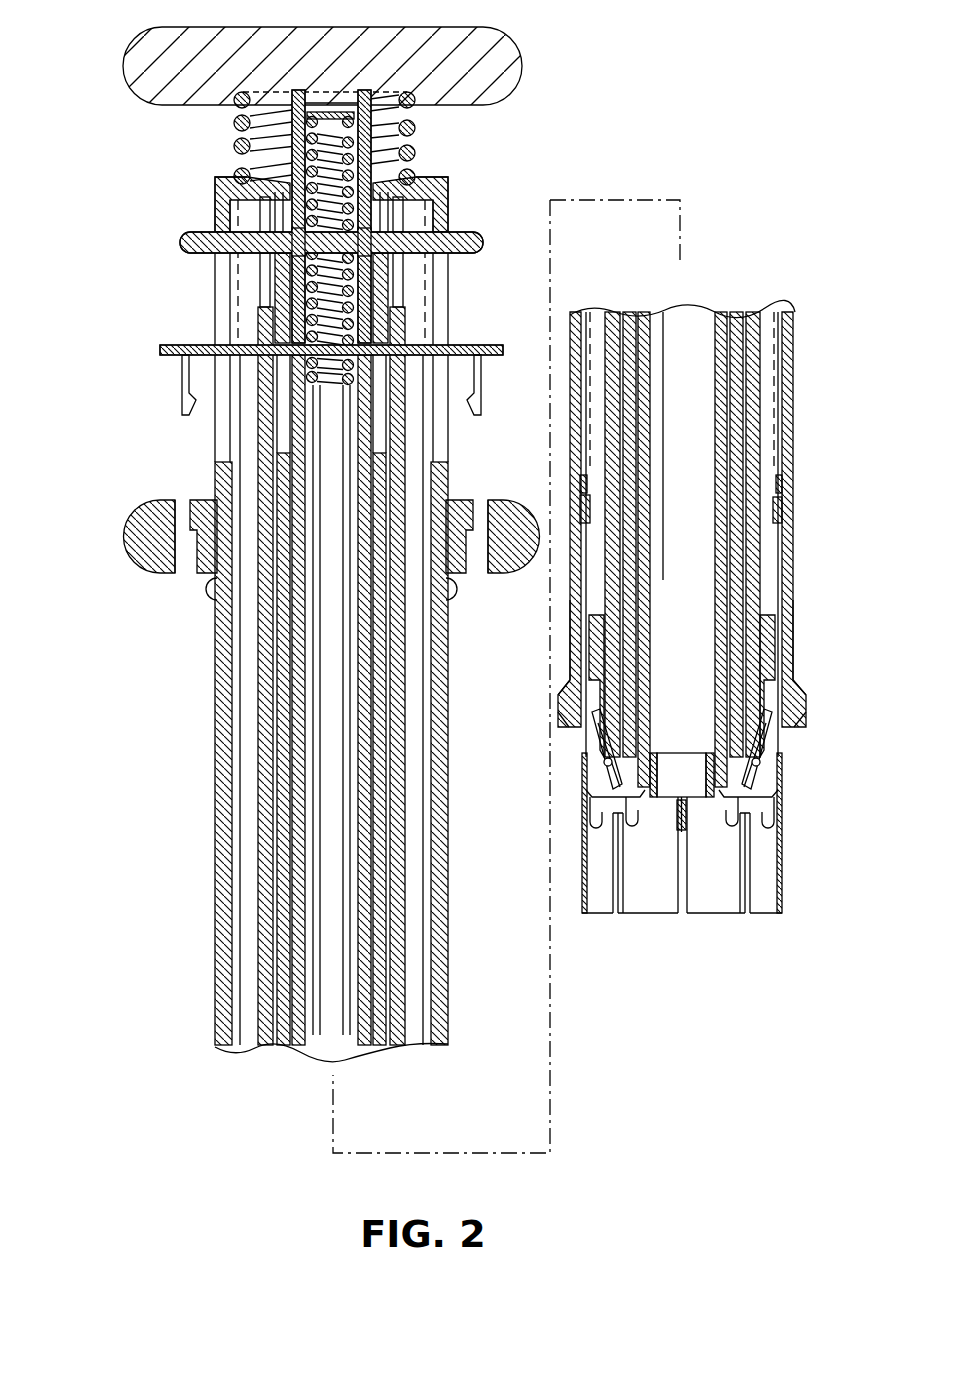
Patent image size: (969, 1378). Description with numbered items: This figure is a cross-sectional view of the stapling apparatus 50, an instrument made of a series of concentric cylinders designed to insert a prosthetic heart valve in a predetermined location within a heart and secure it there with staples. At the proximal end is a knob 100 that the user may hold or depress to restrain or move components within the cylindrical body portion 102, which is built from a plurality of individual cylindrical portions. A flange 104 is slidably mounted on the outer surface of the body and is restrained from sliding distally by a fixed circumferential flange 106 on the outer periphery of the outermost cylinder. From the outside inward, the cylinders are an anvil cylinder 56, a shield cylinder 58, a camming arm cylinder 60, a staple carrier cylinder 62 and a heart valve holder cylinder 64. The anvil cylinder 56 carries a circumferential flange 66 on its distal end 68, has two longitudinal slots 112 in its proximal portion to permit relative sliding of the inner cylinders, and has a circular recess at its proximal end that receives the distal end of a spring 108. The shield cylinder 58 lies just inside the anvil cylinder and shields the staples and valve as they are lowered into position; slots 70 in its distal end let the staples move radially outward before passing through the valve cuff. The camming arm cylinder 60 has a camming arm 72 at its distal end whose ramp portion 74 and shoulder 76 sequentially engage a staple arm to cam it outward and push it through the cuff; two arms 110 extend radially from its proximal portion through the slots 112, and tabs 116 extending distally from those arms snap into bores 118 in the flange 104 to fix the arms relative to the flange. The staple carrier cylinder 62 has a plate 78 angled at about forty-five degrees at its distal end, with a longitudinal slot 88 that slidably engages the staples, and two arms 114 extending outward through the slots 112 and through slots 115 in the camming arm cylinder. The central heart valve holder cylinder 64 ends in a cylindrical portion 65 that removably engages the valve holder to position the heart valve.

The stapling apparatus 50 is at (103, 252).
The anvil cylinder 56 is at (445, 990).
The shield cylinder 58 is at (248, 1043).
The camming arm cylinder 60 is at (397, 1047).
The staple carrier cylinder 62 is at (285, 1040).
The heart valve holder cylinder 64 is at (363, 1048).
The cylindrical portion 65 is at (703, 800).
The circumferential flange 66 is at (802, 722).
The distal end 68 is at (792, 660).
The slots 70 is at (682, 912).
The camming arm 72 is at (766, 625).
The ramp portion 74 is at (760, 740).
The shoulder 76 is at (806, 700).
The plate 78 is at (775, 805).
The slot 88 is at (775, 770).
The knob 100 is at (130, 90).
The cylindrical body portion 102 is at (192, 750).
The flange 104 is at (128, 525).
The fixed circumferential flange 106 is at (207, 590).
The spring 108 is at (413, 130).
The arms 110 is at (193, 347).
The longitudinal slots 112 is at (220, 447).
The arms 114 is at (182, 238).
The slots 115 is at (262, 280).
The tabs 116 is at (183, 392).
The bores 118 is at (190, 503).